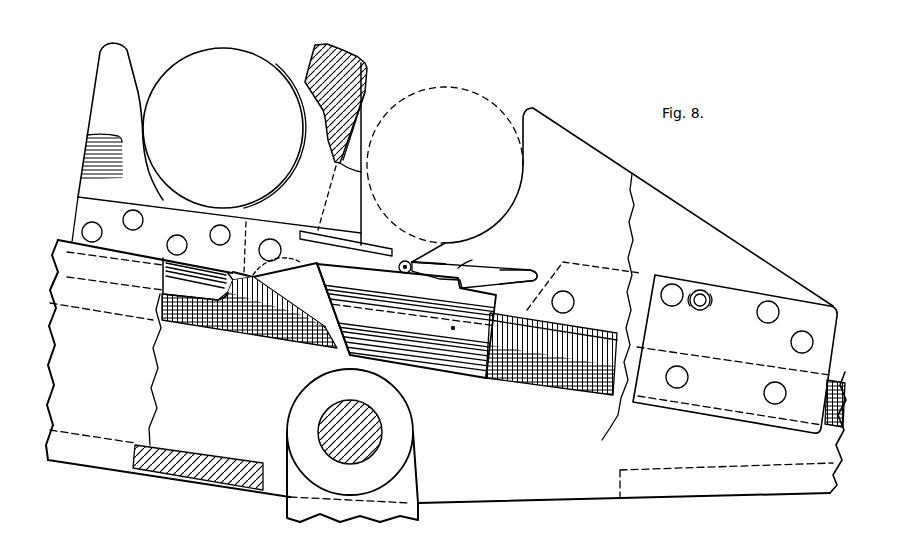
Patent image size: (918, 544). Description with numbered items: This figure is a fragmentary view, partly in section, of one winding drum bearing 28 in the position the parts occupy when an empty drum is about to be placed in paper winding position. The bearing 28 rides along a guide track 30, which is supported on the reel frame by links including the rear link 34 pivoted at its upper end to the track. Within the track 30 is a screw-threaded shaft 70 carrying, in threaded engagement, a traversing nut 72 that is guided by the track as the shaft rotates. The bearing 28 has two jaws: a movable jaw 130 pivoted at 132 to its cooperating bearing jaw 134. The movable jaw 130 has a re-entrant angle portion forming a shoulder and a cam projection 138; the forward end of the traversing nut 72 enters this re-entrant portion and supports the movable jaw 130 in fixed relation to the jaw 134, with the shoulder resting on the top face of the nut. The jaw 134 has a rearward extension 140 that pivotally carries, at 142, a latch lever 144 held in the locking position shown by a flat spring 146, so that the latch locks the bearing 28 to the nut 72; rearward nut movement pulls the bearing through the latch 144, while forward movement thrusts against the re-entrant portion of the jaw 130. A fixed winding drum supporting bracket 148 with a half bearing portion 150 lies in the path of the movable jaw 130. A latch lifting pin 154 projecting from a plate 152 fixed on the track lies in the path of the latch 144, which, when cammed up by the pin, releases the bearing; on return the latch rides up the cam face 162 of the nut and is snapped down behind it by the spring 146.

The bearing 28 is at (163, 223).
The track 30 is at (65, 240).
The rear link 34 is at (405, 487).
The screw-threaded shaft 70 is at (263, 340).
The traversing nut 72 is at (452, 355).
The movable jaw 130 is at (368, 73).
The pivot 132 is at (271, 249).
The bearing jaw 134 is at (128, 63).
The cam projection 138 is at (303, 352).
The rearward extension 140 is at (320, 253).
The pivot 142 is at (410, 265).
The latch lever 144 is at (510, 272).
The flat spring 146 is at (467, 260).
The winding drum supporting bracket 148 is at (615, 171).
The half bearing portion 150 is at (520, 188).
The plate 152 is at (735, 293).
The latch lifting pin 154 is at (702, 308).
The cam face 162 is at (443, 287).